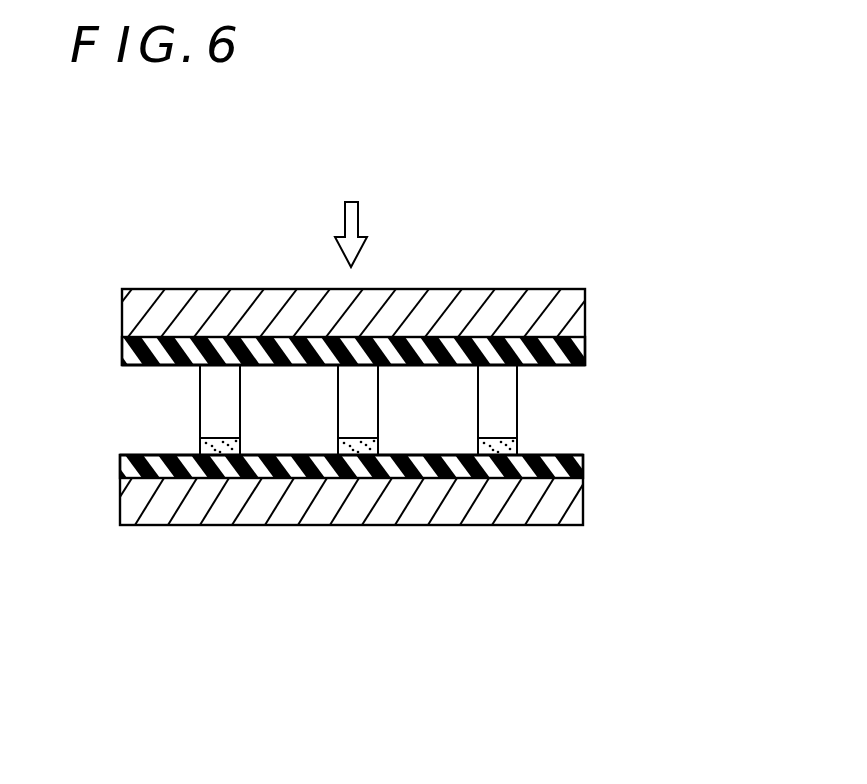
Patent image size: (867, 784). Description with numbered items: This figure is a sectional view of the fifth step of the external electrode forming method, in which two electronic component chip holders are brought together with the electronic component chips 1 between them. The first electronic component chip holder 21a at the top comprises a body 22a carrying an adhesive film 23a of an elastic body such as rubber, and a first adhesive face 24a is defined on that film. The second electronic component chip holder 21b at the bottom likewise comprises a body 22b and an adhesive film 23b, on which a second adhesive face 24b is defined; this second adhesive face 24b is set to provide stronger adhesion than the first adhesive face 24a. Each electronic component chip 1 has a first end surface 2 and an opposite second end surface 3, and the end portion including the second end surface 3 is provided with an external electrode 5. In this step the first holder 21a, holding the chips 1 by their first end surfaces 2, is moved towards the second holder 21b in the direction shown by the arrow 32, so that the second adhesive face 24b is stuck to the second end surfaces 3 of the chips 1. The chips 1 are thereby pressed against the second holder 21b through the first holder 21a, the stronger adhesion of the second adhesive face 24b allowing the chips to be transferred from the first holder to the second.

The electronic component chip 1 is at (199, 405).
The first end surface 2 is at (347, 365).
The second end surface 3 is at (358, 456).
The external electrode 5 is at (493, 456).
The first electronic component chip holder 21a is at (592, 309).
The second electronic component chip holder 21b is at (588, 508).
The body 22a is at (127, 295).
The body 22b is at (126, 517).
The adhesive film 23a is at (127, 356).
The adhesive film 23b is at (118, 473).
The first adhesive face 24a is at (560, 366).
The second adhesive face 24b is at (576, 457).
The arrow 32 is at (356, 200).